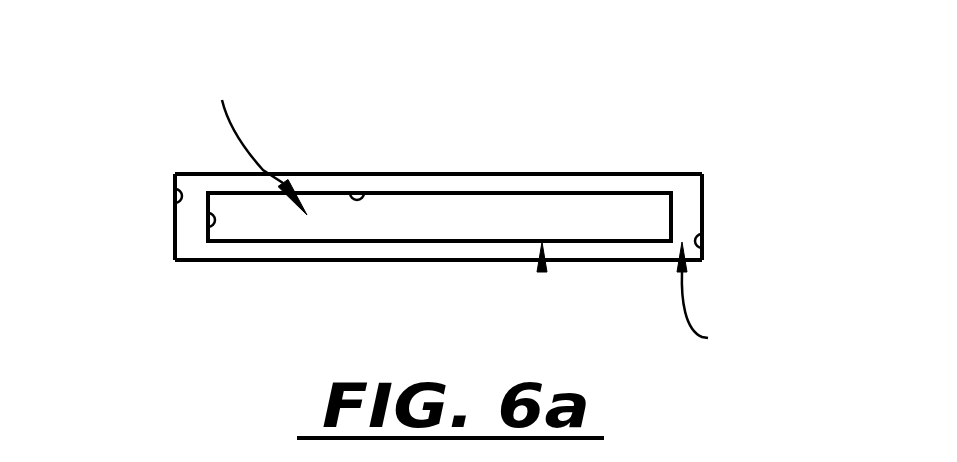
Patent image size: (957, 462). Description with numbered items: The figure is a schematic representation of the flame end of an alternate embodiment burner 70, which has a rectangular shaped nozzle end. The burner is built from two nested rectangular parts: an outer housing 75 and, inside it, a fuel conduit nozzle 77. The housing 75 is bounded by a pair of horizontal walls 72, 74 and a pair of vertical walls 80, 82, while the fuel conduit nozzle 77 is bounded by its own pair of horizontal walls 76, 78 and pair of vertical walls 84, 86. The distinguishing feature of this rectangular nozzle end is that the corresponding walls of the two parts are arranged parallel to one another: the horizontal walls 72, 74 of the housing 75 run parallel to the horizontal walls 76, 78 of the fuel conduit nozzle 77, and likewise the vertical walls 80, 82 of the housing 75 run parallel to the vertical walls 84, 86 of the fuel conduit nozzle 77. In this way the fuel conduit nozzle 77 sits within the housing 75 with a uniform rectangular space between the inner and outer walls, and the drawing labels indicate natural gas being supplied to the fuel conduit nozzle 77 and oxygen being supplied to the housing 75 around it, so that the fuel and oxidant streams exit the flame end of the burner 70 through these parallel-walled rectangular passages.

The burner 70 is at (207, 290).
The horizontal wall of housing 72 is at (435, 261).
The horizontal wall of housing 74 is at (467, 174).
The housing 75 is at (724, 175).
The horizontal wall of fuel conduit nozzle 76 is at (280, 241).
The fuel conduit nozzle 77 is at (542, 272).
The horizontal wall of fuel conduit nozzle 78 is at (357, 193).
The vertical wall of housing 80 is at (706, 242).
The vertical wall of housing 82 is at (175, 208).
The vertical wall of fuel conduit nozzle 84 is at (671, 212).
The vertical wall of fuel conduit nozzle 86 is at (210, 231).